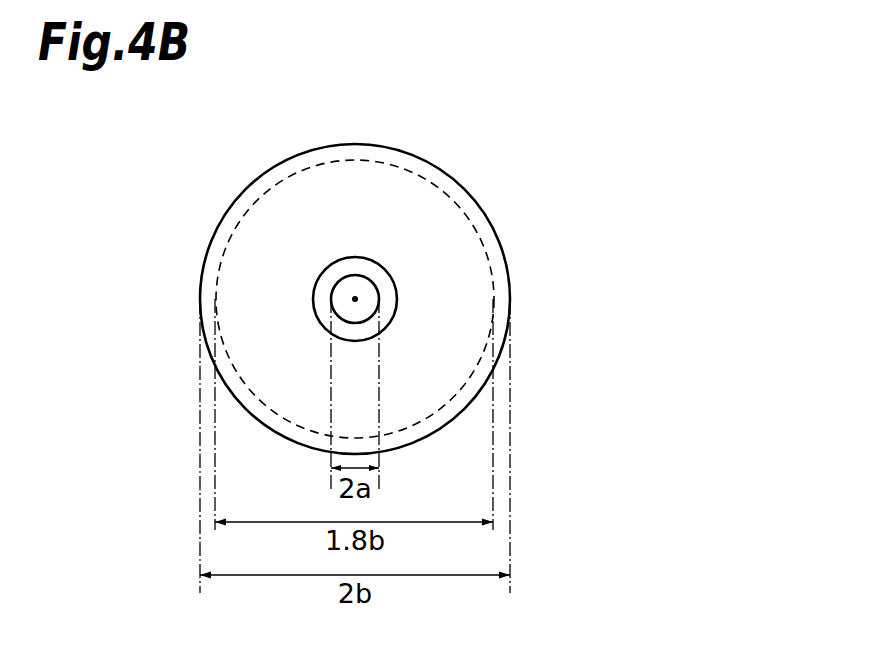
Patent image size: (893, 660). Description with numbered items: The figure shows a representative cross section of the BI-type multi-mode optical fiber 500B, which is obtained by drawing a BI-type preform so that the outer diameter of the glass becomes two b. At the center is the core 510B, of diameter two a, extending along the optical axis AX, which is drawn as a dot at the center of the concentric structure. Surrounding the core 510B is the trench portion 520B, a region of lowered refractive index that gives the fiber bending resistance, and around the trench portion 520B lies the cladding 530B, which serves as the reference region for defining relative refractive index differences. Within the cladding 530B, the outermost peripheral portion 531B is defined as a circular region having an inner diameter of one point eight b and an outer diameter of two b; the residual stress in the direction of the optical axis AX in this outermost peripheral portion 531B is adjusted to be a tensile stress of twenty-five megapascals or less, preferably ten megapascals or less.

The BI-type multi-mode optical fiber 500B is at (427, 153).
The outermost peripheral portion 531B is at (265, 187).
The cladding 530B is at (360, 222).
The trench portion 520B is at (338, 275).
The core 510B is at (345, 292).
The optical axis AX is at (355, 298).